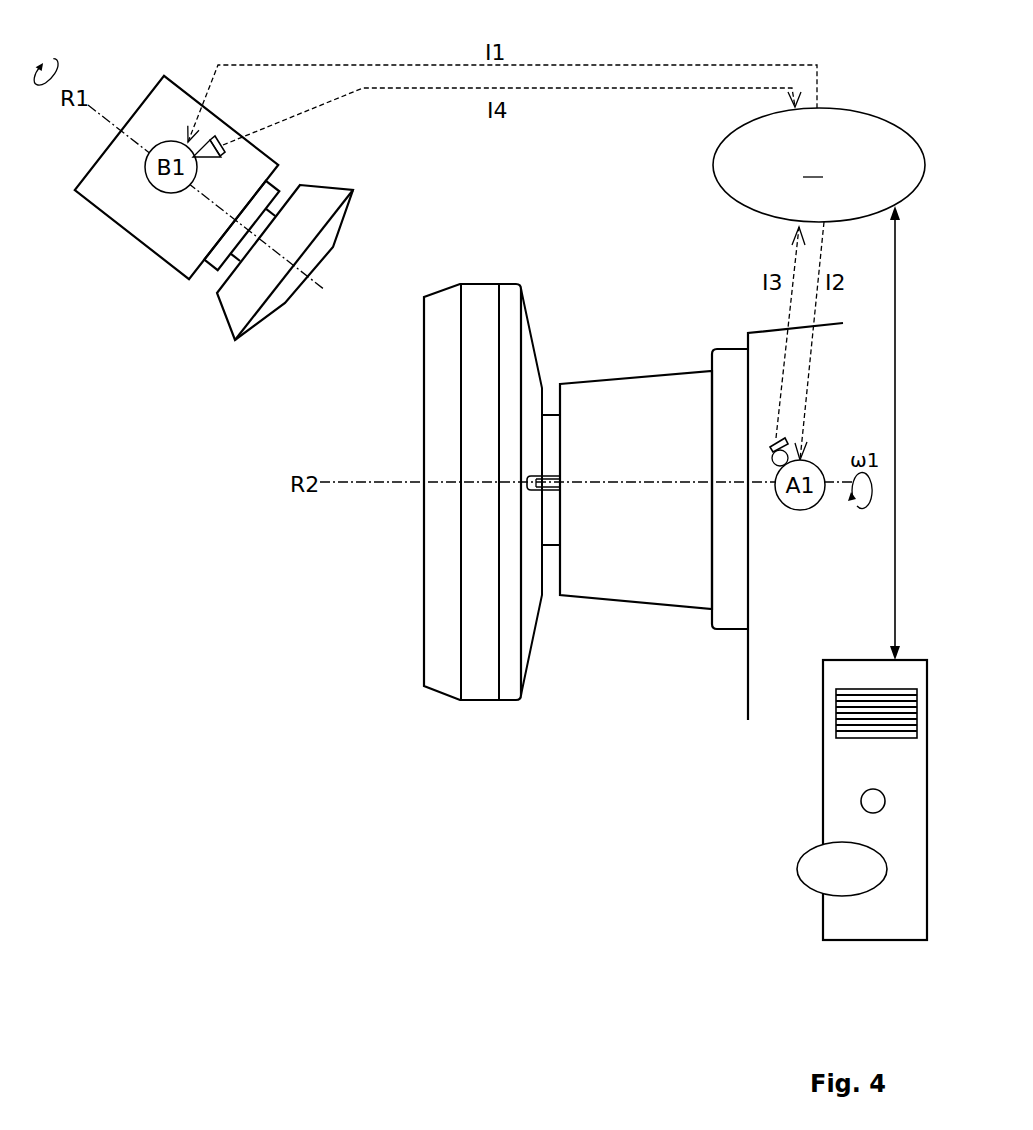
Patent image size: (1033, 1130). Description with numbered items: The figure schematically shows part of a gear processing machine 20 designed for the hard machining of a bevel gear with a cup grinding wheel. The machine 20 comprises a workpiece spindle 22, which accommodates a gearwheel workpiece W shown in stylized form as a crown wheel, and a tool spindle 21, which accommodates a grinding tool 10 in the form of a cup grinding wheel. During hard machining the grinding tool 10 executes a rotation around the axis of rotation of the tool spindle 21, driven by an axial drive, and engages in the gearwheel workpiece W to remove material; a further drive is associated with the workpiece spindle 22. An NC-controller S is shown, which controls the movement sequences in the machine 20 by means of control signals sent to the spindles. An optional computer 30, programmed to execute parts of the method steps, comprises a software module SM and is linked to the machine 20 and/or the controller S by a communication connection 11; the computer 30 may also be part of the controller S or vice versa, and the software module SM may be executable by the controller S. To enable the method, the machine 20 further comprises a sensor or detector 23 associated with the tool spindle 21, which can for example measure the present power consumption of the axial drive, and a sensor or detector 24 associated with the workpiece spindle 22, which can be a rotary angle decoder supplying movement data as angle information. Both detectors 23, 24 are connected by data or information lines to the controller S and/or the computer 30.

The grinding tool 10 is at (469, 704).
The connection 11 is at (896, 340).
The gear processing machine 20 is at (912, 28).
The tool spindle 21 is at (648, 596).
The workpiece spindle 22 is at (164, 90).
The sensor or detector 23 is at (770, 445).
The sensor or detector 24 is at (211, 138).
The computer 30 is at (862, 836).
The gearwheel workpiece W is at (328, 192).
The NC-controller S is at (819, 165).
The software module SM is at (842, 869).